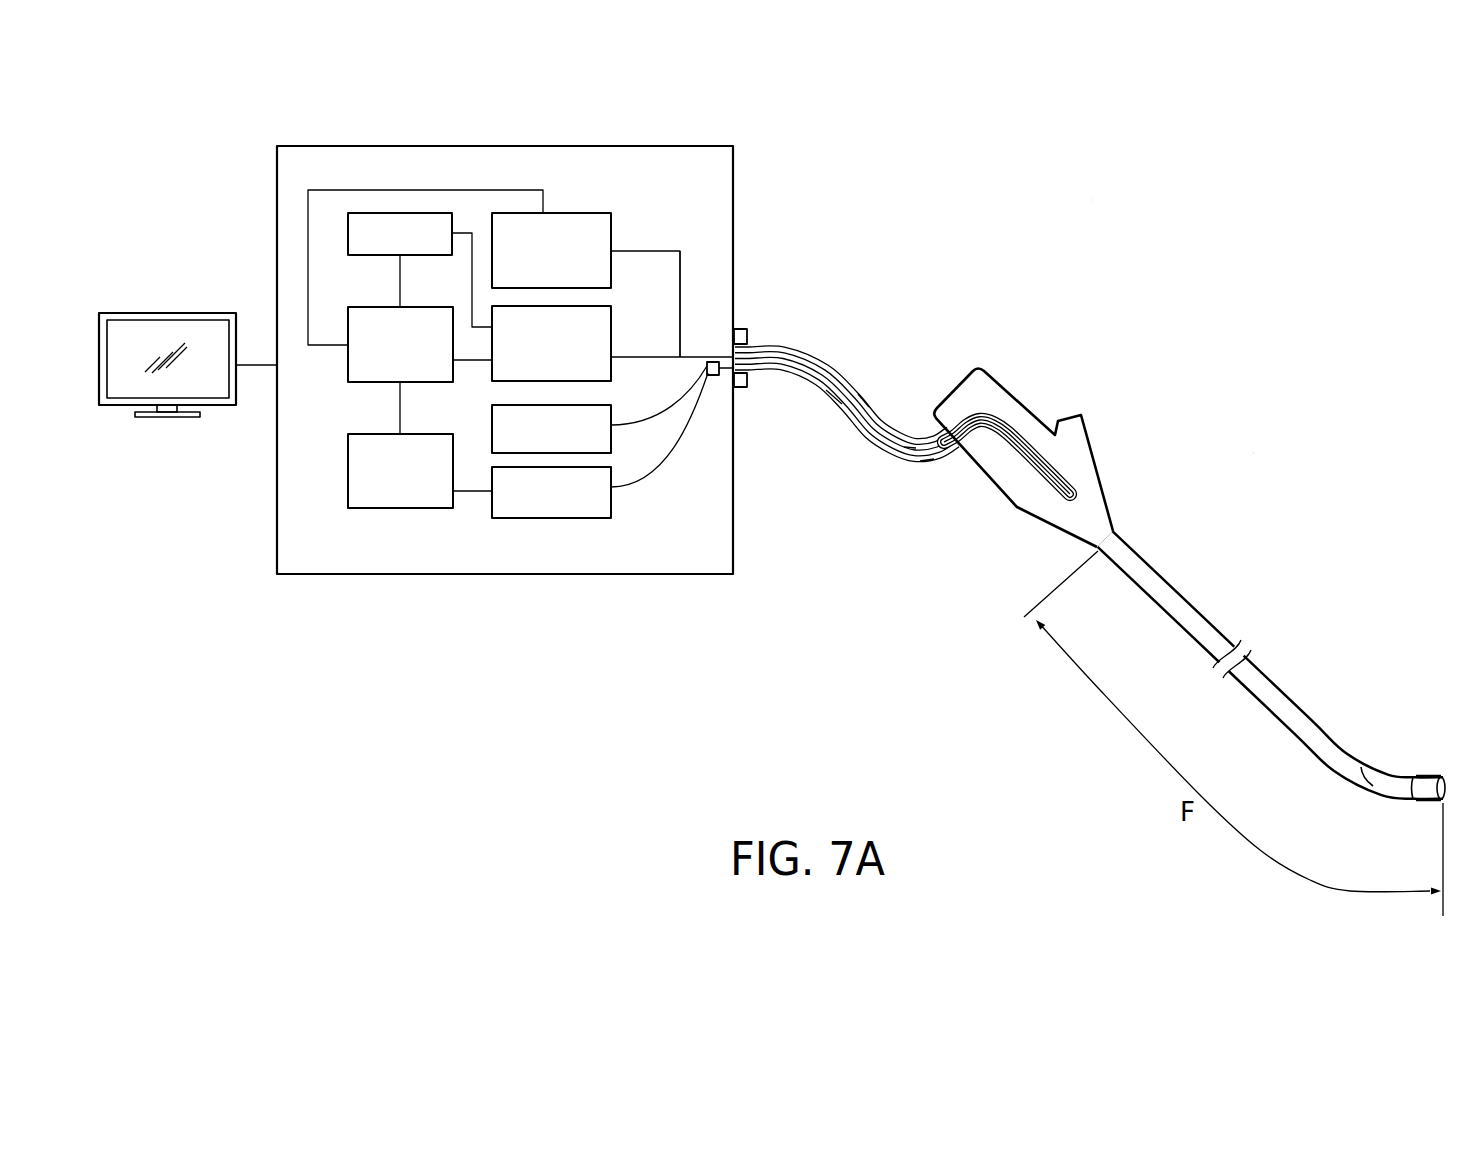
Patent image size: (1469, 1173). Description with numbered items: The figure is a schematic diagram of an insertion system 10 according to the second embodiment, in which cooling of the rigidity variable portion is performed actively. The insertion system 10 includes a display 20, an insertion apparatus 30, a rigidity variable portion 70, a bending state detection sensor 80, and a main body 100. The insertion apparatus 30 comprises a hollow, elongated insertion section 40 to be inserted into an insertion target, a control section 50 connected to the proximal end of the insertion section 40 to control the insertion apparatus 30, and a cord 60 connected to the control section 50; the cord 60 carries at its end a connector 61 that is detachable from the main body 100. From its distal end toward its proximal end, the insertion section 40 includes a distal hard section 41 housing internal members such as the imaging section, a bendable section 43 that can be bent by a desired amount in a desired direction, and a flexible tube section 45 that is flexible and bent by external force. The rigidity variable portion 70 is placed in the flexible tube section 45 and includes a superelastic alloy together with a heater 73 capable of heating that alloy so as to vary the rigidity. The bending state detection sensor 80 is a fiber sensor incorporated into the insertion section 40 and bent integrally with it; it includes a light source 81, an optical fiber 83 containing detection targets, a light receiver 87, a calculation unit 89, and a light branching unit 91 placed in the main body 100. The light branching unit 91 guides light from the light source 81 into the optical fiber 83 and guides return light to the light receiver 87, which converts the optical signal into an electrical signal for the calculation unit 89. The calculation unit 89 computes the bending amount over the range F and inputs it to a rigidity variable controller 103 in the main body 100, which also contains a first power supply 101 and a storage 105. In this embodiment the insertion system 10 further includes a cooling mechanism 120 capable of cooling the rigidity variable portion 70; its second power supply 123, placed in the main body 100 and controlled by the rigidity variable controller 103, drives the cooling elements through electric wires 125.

The insertion system 10 is at (1093, 199).
The display 20 is at (166, 312).
The insertion apparatus 30 is at (1254, 452).
The insertion section 40 is at (1184, 482).
The distal hard section 41 is at (1426, 776).
The bendable section 43 is at (1390, 772).
The flexible tube section 45 is at (1207, 622).
The control section 50 is at (988, 366).
The cord 60 is at (823, 360).
The connector 61 is at (747, 337).
The rigidity variable portion 70 is at (868, 408).
The heater 73 is at (910, 447).
The bending state detection sensor 80 is at (834, 397).
The light source 81 is at (492, 428).
The optical fiber 83 is at (927, 461).
The light receiver 87 is at (513, 518).
The calculation unit 89 is at (402, 510).
The light branching unit 91 is at (713, 376).
The main body 100 is at (734, 154).
The first power supply 101 is at (611, 317).
The rigidity variable controller 103 is at (348, 370).
The storage 105 is at (363, 255).
The cooling mechanism 120 is at (686, 240).
The second power supply 123 is at (611, 225).
The electric wires 125 is at (1053, 513).